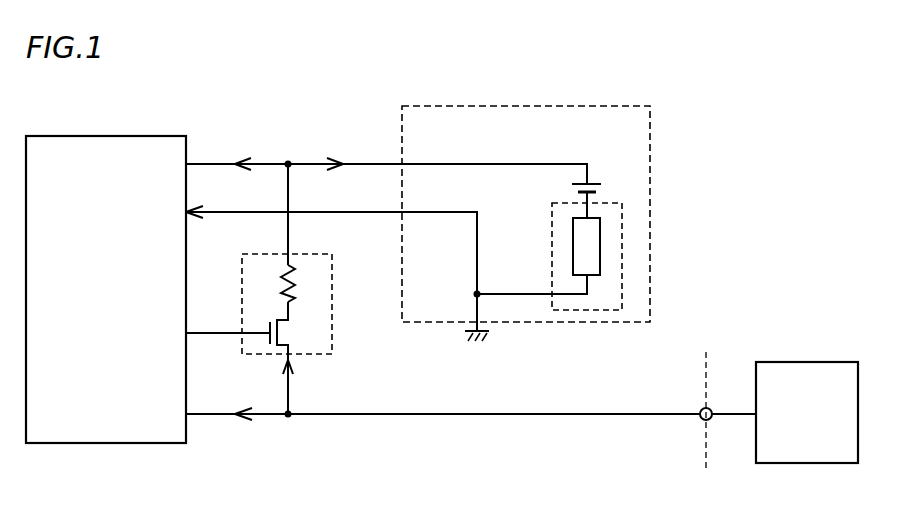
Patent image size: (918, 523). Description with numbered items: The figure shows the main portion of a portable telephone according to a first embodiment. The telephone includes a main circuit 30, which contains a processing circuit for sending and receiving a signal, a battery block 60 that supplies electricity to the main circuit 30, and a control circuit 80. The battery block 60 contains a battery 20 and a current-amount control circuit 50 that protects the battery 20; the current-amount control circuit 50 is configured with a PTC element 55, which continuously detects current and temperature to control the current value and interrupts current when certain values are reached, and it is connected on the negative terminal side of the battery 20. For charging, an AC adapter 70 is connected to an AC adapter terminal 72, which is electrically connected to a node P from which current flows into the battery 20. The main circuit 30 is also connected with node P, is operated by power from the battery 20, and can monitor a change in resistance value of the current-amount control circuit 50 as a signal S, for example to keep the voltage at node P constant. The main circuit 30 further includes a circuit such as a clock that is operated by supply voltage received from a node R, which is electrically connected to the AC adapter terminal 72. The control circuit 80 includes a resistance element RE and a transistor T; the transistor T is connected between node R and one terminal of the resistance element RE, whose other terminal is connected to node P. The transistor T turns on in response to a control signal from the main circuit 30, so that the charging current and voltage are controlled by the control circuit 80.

The main circuit 30 is at (166, 136).
The battery block 60 is at (650, 118).
The battery 20 is at (603, 189).
The PTC element 55 is at (600, 265).
The current-amount control circuit 50 is at (622, 304).
The control circuit 80 is at (332, 354).
The resistance element RE is at (282, 279).
The transistor T is at (287, 334).
The node P is at (288, 163).
The signal S is at (215, 214).
The node R is at (288, 418).
The AC adapter terminal 72 is at (714, 408).
The AC adapter 70 is at (843, 362).